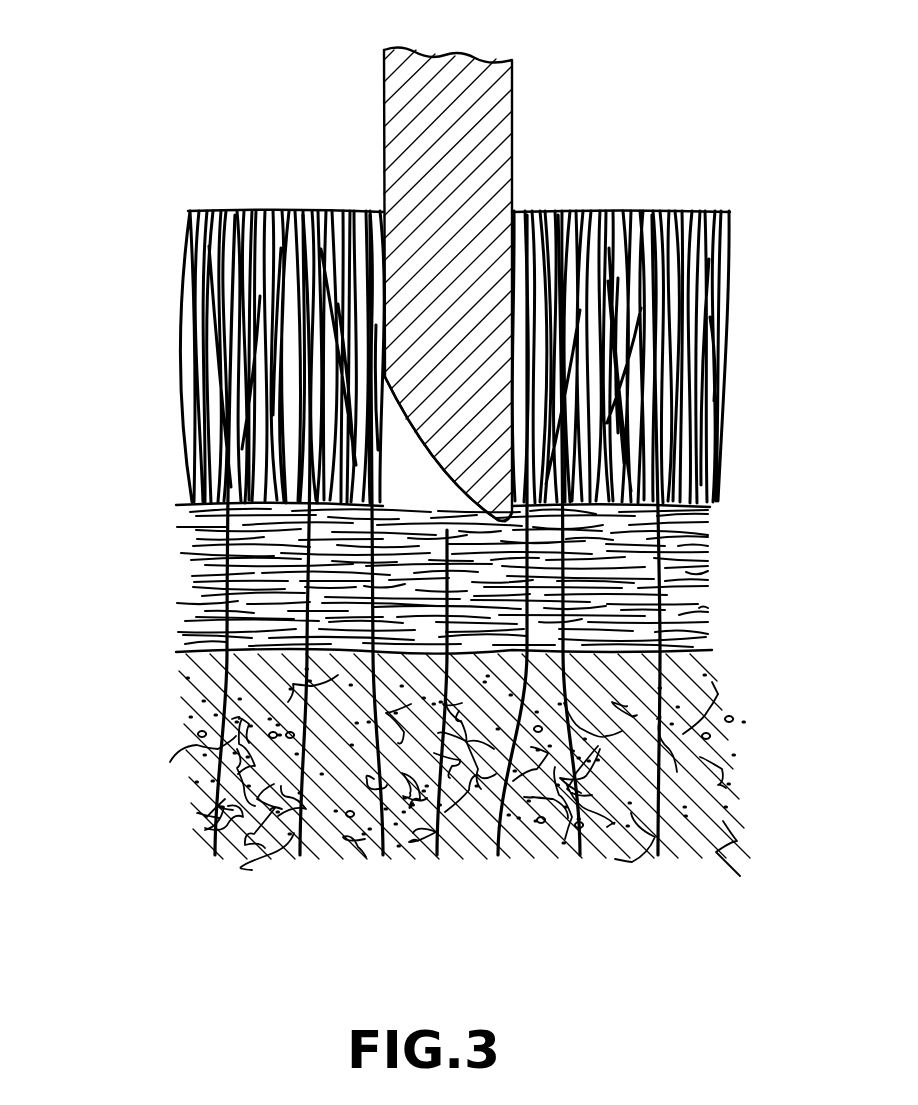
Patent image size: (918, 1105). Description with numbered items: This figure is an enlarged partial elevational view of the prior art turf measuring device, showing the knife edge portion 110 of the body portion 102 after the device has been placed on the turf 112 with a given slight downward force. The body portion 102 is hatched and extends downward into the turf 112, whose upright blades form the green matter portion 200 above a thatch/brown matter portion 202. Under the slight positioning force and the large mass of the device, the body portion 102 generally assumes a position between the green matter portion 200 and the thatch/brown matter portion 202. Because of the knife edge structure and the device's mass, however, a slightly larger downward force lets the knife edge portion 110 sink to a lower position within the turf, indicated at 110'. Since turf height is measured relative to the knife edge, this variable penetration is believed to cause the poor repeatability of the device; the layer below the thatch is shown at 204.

The body portion 102 is at (383, 82).
The knife edge portion 110 is at (441, 452).
The knife edge portion at lower position 110' is at (479, 560).
The turf 112 is at (183, 295).
The green matter portion 200 is at (643, 212).
The thatch/brown matter portion 202 is at (620, 613).
The soil 204 is at (257, 735).